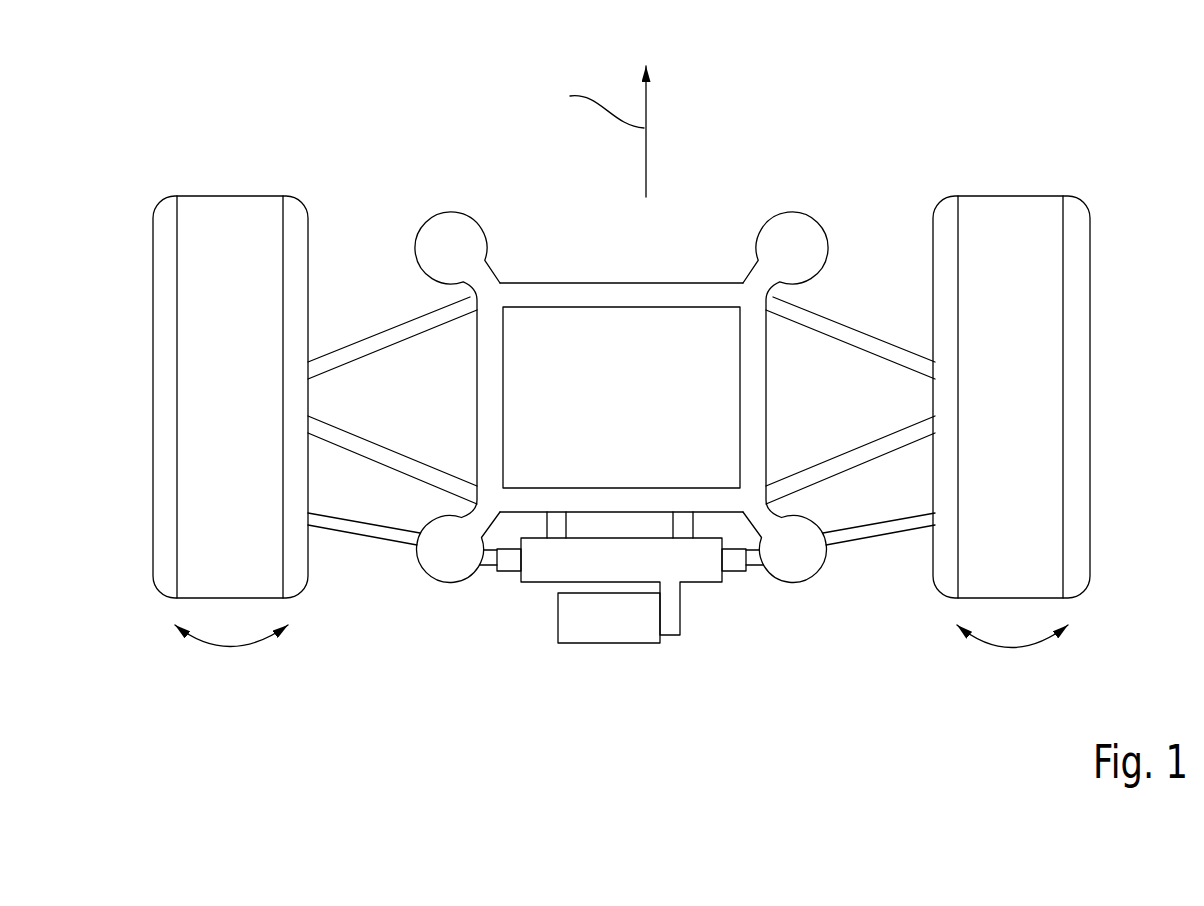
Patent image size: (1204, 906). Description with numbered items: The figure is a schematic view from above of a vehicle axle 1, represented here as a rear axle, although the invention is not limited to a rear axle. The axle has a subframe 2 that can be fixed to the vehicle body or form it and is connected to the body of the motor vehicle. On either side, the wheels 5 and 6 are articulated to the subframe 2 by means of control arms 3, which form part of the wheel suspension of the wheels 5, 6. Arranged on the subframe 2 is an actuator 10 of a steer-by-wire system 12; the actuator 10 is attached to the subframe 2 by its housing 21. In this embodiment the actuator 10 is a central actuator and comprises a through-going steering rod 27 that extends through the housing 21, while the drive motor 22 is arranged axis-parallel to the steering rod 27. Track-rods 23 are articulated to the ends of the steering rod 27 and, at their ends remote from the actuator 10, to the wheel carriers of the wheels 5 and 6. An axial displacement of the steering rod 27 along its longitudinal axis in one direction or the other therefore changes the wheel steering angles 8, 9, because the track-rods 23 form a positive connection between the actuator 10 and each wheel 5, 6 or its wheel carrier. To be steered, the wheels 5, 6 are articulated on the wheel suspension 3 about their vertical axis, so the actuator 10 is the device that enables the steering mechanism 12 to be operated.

The vehicle axle 1 is at (712, 124).
The subframe 2 is at (545, 287).
The control arms 3 is at (372, 452).
The wheel 5 is at (231, 227).
The wheel 6 is at (1008, 228).
The wheel steering angle 8 is at (227, 650).
The wheel steering angle 9 is at (1010, 652).
The actuator 10 is at (724, 624).
The steer-by-wire system 12 is at (421, 706).
The housing 21 is at (550, 578).
The drive motor 22 is at (632, 635).
The track-rods 23 is at (378, 533).
The steering rod 27 is at (512, 565).